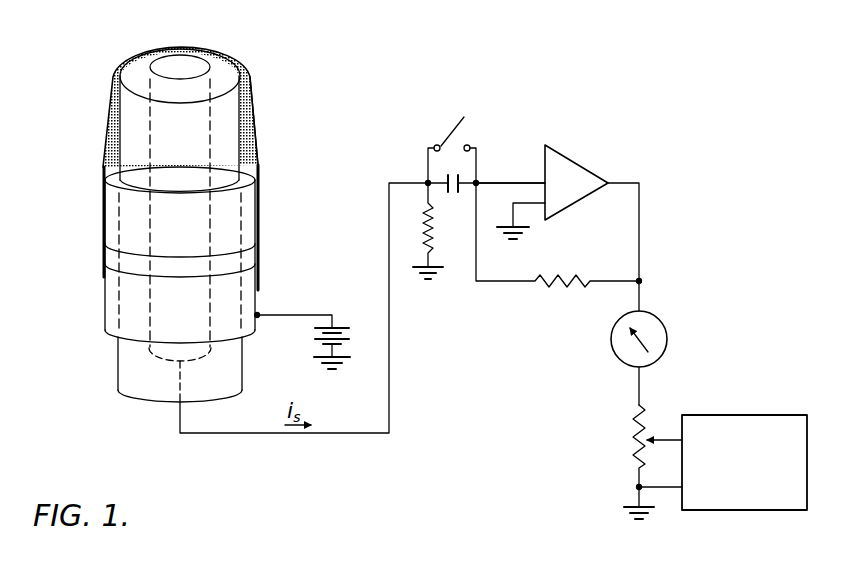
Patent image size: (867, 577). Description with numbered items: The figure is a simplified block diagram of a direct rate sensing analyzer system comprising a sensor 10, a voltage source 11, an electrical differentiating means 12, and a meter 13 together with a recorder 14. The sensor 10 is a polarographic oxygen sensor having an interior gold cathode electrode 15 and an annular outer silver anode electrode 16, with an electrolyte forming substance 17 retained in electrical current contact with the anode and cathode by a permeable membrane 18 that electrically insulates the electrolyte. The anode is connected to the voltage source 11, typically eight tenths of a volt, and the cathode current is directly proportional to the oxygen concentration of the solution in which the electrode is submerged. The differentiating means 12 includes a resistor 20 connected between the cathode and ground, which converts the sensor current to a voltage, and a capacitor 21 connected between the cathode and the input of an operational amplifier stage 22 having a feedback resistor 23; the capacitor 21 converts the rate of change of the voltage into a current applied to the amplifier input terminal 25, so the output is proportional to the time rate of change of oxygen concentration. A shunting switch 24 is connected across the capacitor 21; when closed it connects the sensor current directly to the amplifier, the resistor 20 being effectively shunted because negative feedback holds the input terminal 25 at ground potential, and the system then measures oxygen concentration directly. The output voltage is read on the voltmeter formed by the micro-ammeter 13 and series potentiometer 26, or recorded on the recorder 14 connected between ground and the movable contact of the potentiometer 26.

The sensor 10 is at (259, 97).
The voltage source 11 is at (312, 333).
The electrical differentiating means 12 is at (415, 126).
The meter 13 is at (667, 330).
The recorder 14 is at (762, 415).
The cathode electrode 15 is at (185, 60).
The anode electrode 16 is at (110, 302).
The electrolyte forming substance 17 is at (108, 140).
The permeable membrane 18 is at (260, 147).
The resistor 20 is at (427, 230).
The capacitor 21 is at (452, 193).
The operational amplifier stage 22 is at (580, 165).
The feedback resistor 23 is at (567, 285).
The shunting switch 24 is at (464, 118).
The amplifier input terminal 25 is at (518, 182).
The potentiometer 26 is at (638, 437).